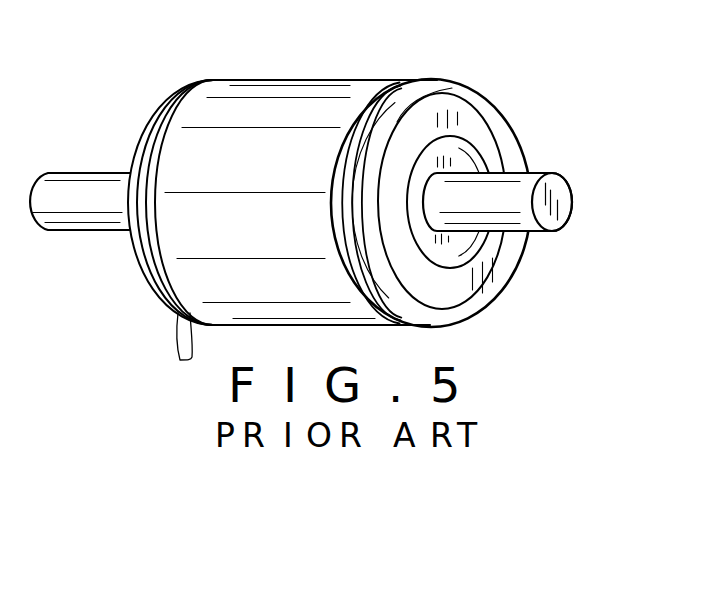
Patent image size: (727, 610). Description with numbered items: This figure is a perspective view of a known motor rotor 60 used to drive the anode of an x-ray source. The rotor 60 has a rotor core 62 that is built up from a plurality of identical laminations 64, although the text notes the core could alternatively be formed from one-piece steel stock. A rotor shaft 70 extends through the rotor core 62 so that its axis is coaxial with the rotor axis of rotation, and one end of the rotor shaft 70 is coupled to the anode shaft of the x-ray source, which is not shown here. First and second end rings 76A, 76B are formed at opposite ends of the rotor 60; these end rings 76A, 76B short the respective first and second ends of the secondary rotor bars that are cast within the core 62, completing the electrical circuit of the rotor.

The motor rotor 60 is at (314, 201).
The rotor core 62 is at (300, 93).
The laminations 64 is at (373, 95).
The rotor shaft 70 is at (106, 183).
The first end ring 76A is at (487, 134).
The second end ring 76B is at (157, 113).